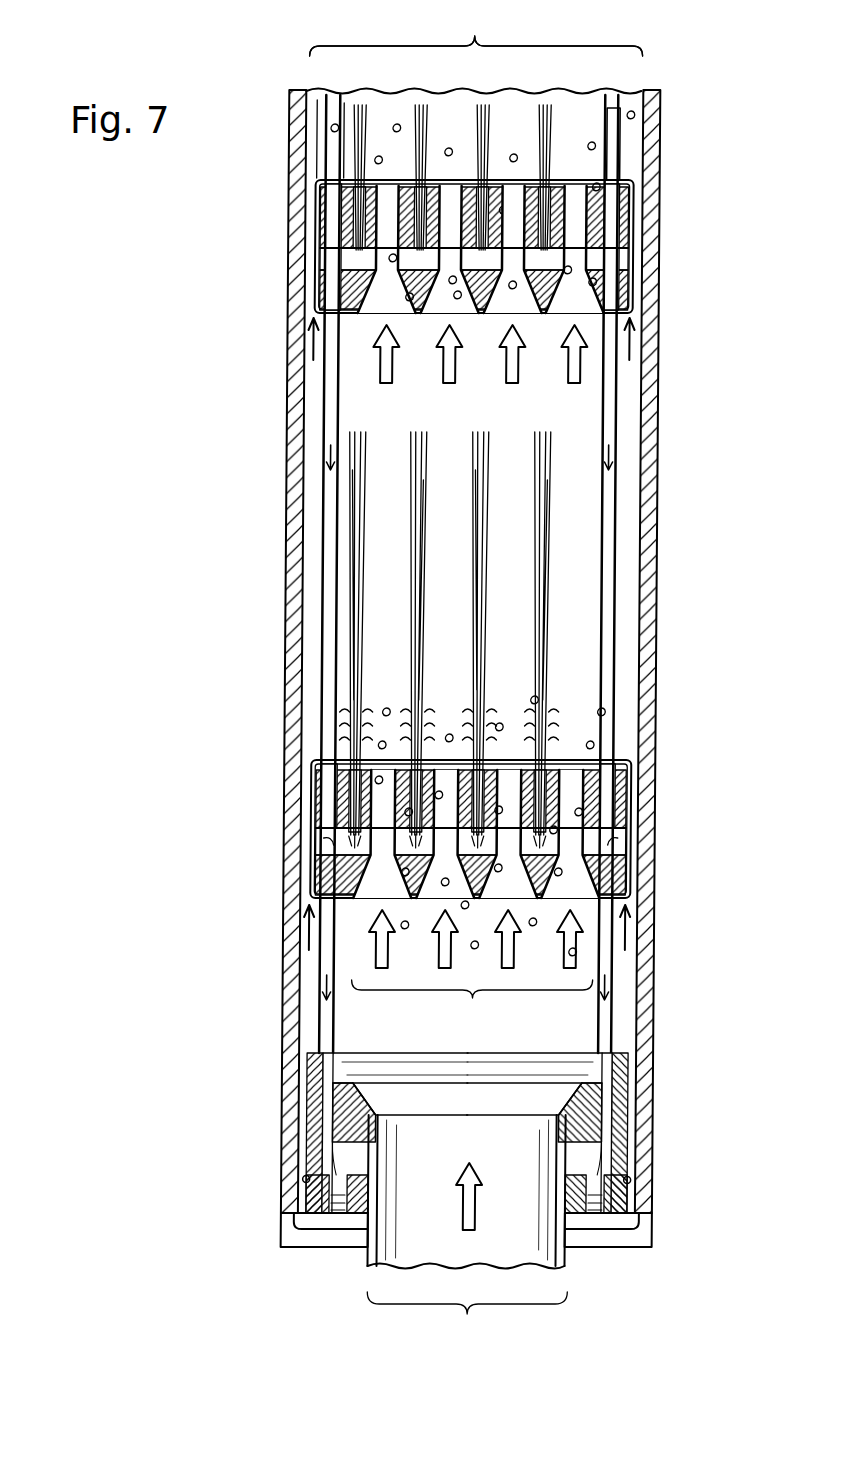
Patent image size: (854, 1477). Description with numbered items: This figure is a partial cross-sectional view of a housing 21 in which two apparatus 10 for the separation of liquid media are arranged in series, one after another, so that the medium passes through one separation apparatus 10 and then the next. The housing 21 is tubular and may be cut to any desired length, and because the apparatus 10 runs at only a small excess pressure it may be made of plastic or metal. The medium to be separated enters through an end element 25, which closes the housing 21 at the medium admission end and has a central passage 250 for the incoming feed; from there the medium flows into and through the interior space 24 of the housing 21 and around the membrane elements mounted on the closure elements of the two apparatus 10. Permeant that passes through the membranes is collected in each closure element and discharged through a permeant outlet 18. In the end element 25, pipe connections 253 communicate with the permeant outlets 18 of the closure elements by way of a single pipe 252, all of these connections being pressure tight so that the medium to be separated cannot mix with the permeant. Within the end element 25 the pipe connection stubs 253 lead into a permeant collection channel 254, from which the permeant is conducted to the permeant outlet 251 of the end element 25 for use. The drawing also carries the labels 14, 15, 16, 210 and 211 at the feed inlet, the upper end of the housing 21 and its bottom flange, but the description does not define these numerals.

The apparatus 10 is at (258, 232).
The feed liquid flow 14 is at (480, 998).
The filtrate outlet region 15 is at (626, 104).
The outlet 16 is at (476, 29).
The permeant outlet 18 is at (640, 950).
The housing 21 is at (646, 528).
The interior space 24 is at (514, 585).
The end element 25 is at (638, 1073).
The housing bottom flange 210 is at (344, 1232).
The housing outlet 211 is at (476, 29).
The central passage 250 is at (514, 1220).
The permeant outlet 251 is at (640, 1180).
The pipe 252 is at (617, 660).
The pipe connections 253 is at (611, 1117).
The permeant collection channel 254 is at (596, 1160).